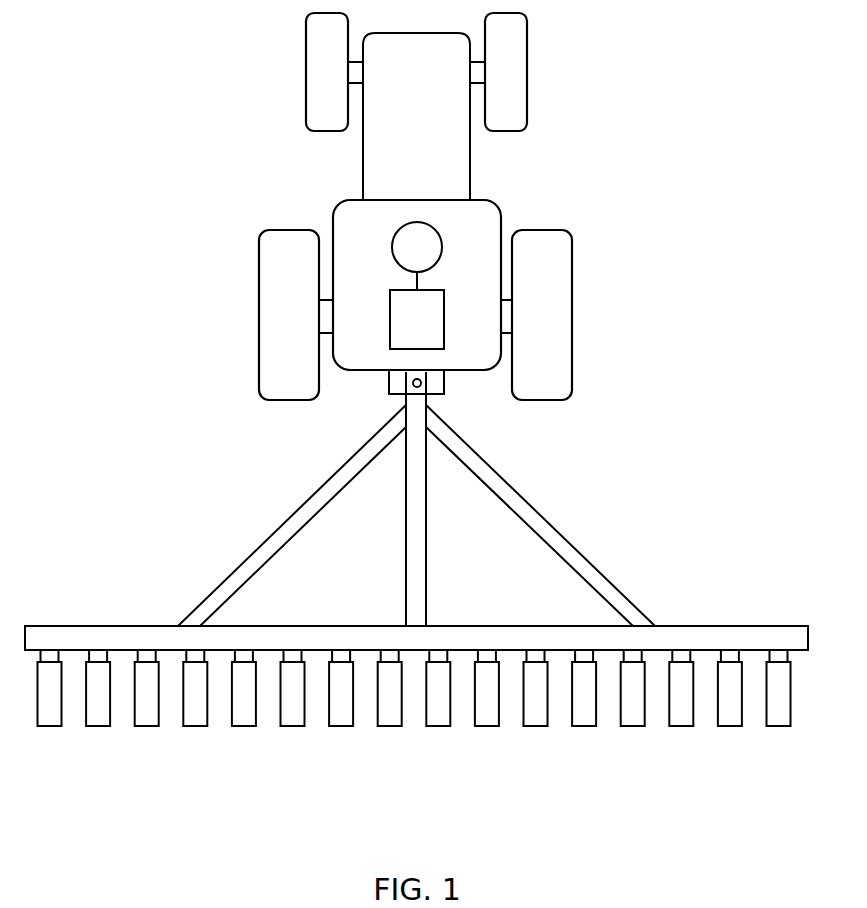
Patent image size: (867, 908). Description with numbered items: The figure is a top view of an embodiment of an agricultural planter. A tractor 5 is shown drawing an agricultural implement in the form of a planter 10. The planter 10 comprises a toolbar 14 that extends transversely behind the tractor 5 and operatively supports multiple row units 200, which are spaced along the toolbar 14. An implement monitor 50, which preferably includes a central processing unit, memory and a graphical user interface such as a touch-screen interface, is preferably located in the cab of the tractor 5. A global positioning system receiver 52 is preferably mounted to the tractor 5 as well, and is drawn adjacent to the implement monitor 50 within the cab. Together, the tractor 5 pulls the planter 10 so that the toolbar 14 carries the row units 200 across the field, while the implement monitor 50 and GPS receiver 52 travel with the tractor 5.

The tractor 5 is at (607, 153).
The planter 10 is at (212, 474).
The toolbar 14 is at (138, 626).
The implement monitor 50 is at (417, 319).
The GPS receiver 52 is at (417, 256).
The row units 200 is at (99, 730).